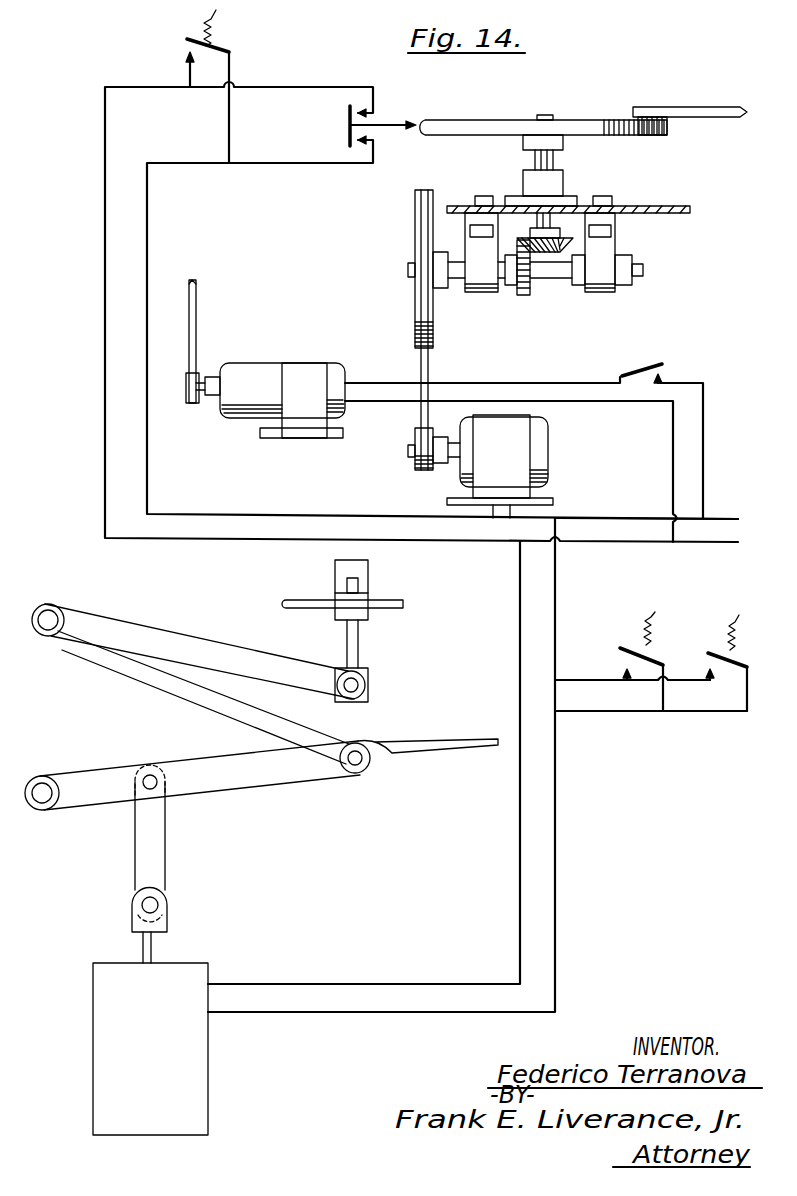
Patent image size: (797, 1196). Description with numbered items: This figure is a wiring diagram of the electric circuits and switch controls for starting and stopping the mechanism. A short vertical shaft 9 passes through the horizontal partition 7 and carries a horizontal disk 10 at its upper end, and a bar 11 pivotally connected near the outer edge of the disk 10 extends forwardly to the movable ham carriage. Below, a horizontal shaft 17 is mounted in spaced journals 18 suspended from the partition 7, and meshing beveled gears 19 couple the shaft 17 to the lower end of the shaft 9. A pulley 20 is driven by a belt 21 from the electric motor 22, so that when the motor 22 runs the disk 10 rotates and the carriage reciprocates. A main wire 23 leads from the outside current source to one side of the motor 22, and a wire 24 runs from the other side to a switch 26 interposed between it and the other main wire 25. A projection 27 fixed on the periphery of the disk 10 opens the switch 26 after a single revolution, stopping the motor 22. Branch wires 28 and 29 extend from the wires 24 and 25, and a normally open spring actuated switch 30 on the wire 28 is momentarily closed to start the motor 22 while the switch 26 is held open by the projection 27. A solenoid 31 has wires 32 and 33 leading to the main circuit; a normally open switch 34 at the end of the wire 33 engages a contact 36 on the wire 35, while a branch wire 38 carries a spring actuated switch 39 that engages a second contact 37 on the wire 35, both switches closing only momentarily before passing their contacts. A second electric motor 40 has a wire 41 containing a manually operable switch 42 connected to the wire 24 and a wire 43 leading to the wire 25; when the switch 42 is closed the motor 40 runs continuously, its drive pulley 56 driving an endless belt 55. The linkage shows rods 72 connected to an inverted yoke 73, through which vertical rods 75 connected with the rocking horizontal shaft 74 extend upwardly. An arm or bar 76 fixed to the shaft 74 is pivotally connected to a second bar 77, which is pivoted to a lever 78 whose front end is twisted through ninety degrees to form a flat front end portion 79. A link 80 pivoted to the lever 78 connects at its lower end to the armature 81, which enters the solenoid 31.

The horizontal partition 7 is at (640, 206).
The short vertical shaft 9 is at (553, 162).
The horizontal disk 10 is at (497, 120).
The bar 11 is at (705, 117).
The horizontal shaft 17 is at (555, 280).
The spaced journals 18 is at (615, 240).
The meshing beveled gears 19 is at (530, 262).
The pulley 20 is at (415, 300).
The belt 21 is at (428, 365).
The electric motor 22 is at (520, 445).
The main circuit wire 23 is at (600, 518).
The wire 24 is at (300, 163).
The main circuit wire 25 is at (283, 87).
The switch 26 is at (348, 125).
The projection 27 is at (416, 120).
The branch wire 28 is at (229, 122).
The branch wire 29 is at (190, 68).
The spring actuated switch 30 is at (221, 50).
The solenoid 31 is at (185, 990).
The wire 32 is at (518, 892).
The wire 33 is at (600, 711).
The switch 34 is at (740, 657).
The wire 35 is at (555, 597).
The contact 36 is at (709, 672).
The second contact 37 is at (625, 672).
The branch wire 38 is at (665, 700).
The spring actuating switch 39 is at (655, 652).
The electric motor 40 is at (280, 363).
The circuit wire 41 is at (535, 383).
The manually operable switch 42 is at (650, 365).
The wire 43 is at (642, 425).
The endless belt 55 is at (196, 322).
The drive pulley 56 is at (188, 400).
The rods 72 is at (300, 600).
The yoke 73 is at (368, 575).
The horizontal shaft 74 is at (368, 685).
The vertical rods 75 is at (358, 645).
The arm or bar 76 is at (218, 648).
The second bar 77 is at (218, 702).
The lever 78 is at (235, 785).
The flat front end portion 79 is at (450, 750).
The link 80 is at (165, 856).
The armature 81 is at (158, 950).